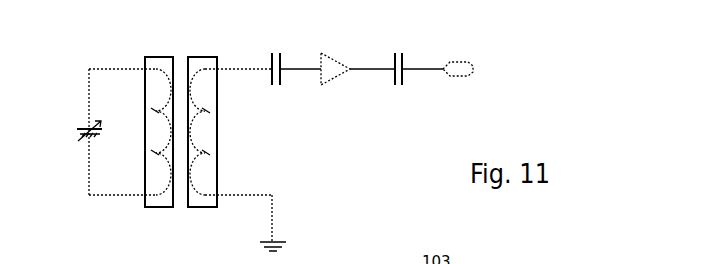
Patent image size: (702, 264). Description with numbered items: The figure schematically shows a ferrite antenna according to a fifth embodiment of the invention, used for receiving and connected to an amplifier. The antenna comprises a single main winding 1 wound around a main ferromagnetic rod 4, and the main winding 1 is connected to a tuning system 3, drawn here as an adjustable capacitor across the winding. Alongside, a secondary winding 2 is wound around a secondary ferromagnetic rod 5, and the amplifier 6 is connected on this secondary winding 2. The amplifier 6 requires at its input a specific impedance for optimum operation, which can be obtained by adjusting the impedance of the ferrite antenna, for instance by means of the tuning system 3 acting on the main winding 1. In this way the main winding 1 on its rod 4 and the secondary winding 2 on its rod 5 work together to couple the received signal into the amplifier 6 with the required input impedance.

The main winding 1 is at (158, 69).
The secondary winding 2 is at (204, 69).
The tuning system 3 is at (80, 126).
The main ferromagnetic rod 4 is at (158, 208).
The secondary ferromagnetic rod 5 is at (202, 208).
The amplifier 6 is at (333, 83).